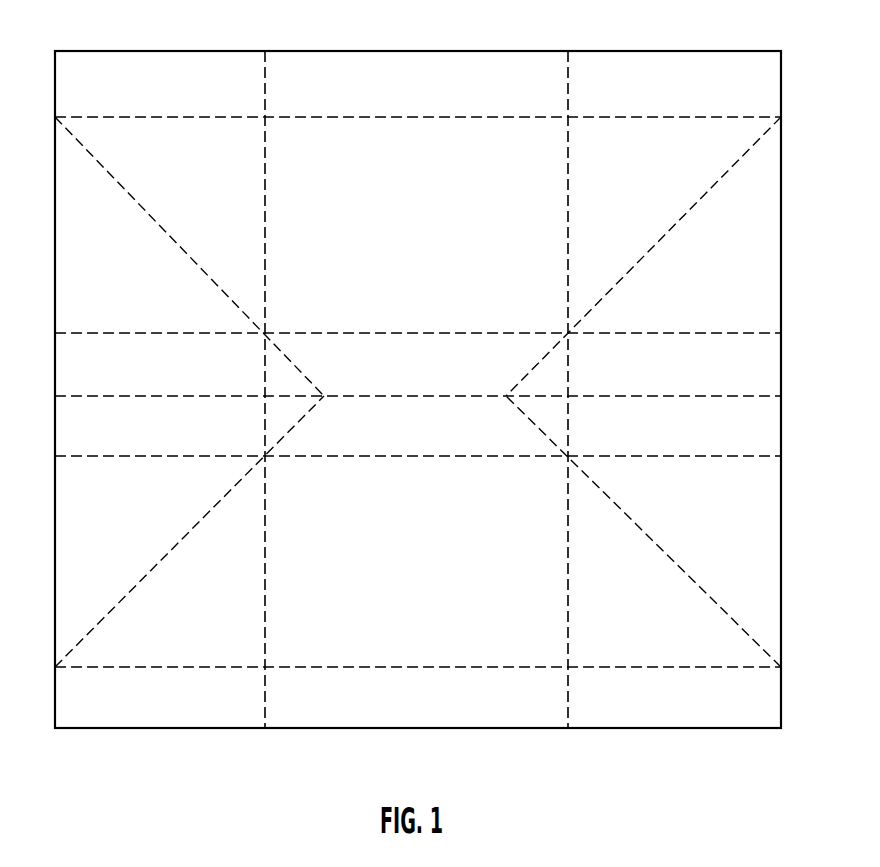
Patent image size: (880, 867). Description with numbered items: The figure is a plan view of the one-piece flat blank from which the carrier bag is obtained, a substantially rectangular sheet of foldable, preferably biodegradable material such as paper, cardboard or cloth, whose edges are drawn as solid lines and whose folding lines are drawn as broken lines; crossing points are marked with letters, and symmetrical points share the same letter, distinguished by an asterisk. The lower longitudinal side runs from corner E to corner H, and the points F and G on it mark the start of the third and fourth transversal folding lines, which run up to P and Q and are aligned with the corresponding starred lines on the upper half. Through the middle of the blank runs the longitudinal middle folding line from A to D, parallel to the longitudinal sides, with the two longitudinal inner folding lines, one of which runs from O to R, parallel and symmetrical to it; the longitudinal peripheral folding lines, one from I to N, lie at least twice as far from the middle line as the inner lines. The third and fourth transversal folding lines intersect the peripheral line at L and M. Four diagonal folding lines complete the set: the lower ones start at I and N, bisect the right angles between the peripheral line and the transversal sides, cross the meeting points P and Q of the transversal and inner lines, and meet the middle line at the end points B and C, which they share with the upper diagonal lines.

The point A is at (46, 396).
The end point B is at (334, 383).
The end point C is at (502, 383).
The point D is at (795, 396).
The point O is at (46, 456).
The point P is at (278, 470).
The point Q is at (558, 470).
The point R is at (794, 456).
The point I is at (47, 668).
The point L is at (277, 683).
The point M is at (584, 683).
The point N is at (797, 668).
The corner point E is at (47, 732).
The point F is at (268, 740).
The point G is at (572, 740).
The corner point H is at (797, 730).